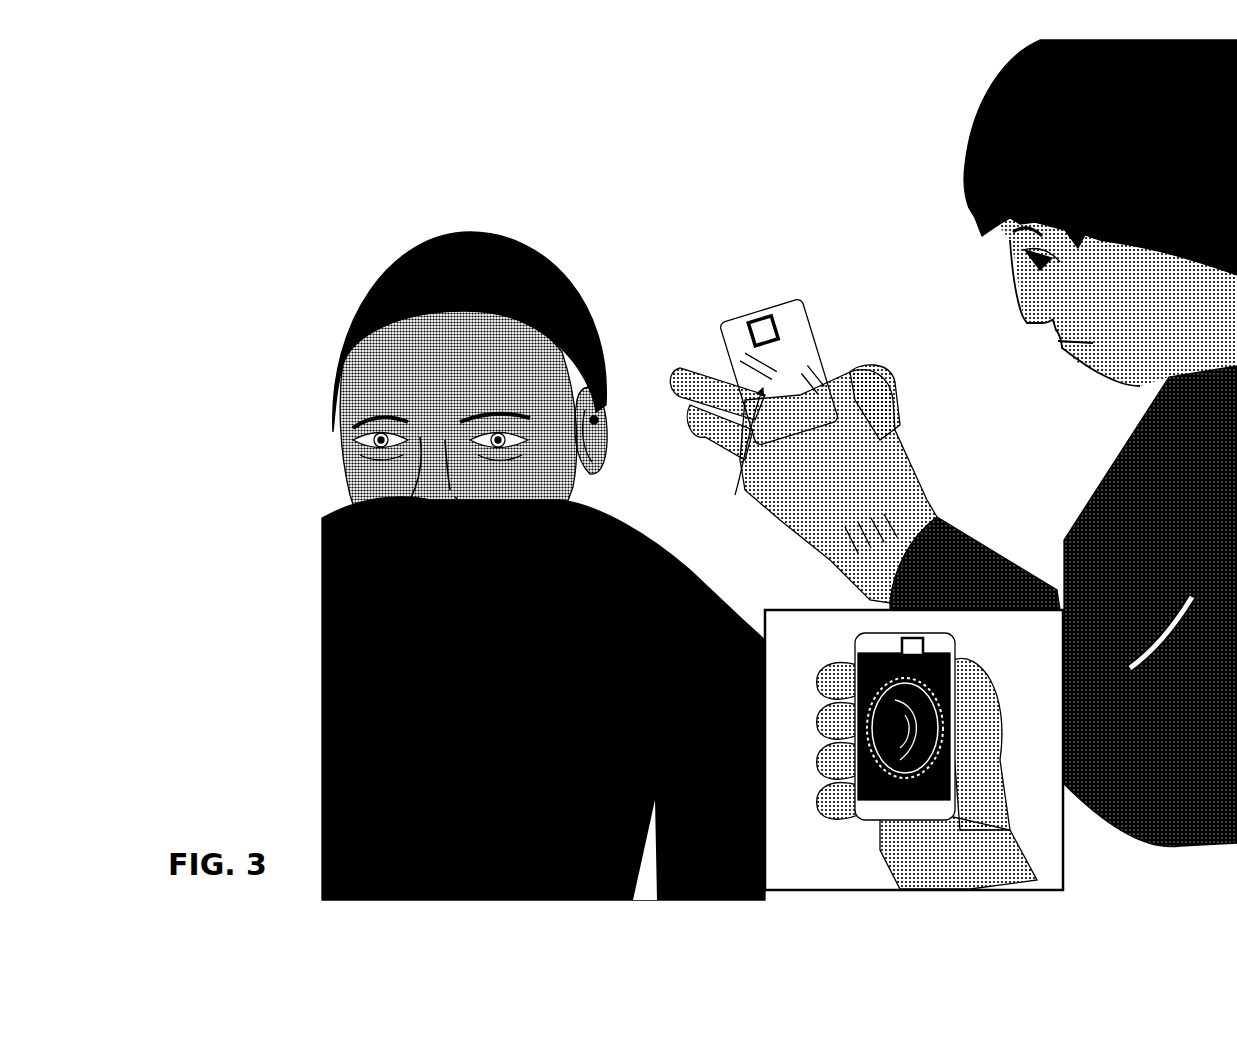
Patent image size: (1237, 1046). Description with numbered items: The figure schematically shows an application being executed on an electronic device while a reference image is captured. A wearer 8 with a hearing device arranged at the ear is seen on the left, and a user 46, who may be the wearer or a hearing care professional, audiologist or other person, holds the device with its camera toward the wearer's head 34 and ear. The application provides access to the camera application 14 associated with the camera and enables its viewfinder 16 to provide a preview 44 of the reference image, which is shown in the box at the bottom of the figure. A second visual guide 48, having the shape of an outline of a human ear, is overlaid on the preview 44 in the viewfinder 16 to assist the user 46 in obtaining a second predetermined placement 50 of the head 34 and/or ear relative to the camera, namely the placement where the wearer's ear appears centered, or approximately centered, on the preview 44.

The wearer 8 is at (470, 392).
The head 34 is at (508, 232).
The second predetermined placement 50 is at (643, 434).
The user 46 is at (975, 130).
The second visual guide 48 is at (866, 755).
The camera application 14 is at (827, 865).
The viewfinder 16 is at (827, 865).
The preview 44 is at (856, 812).